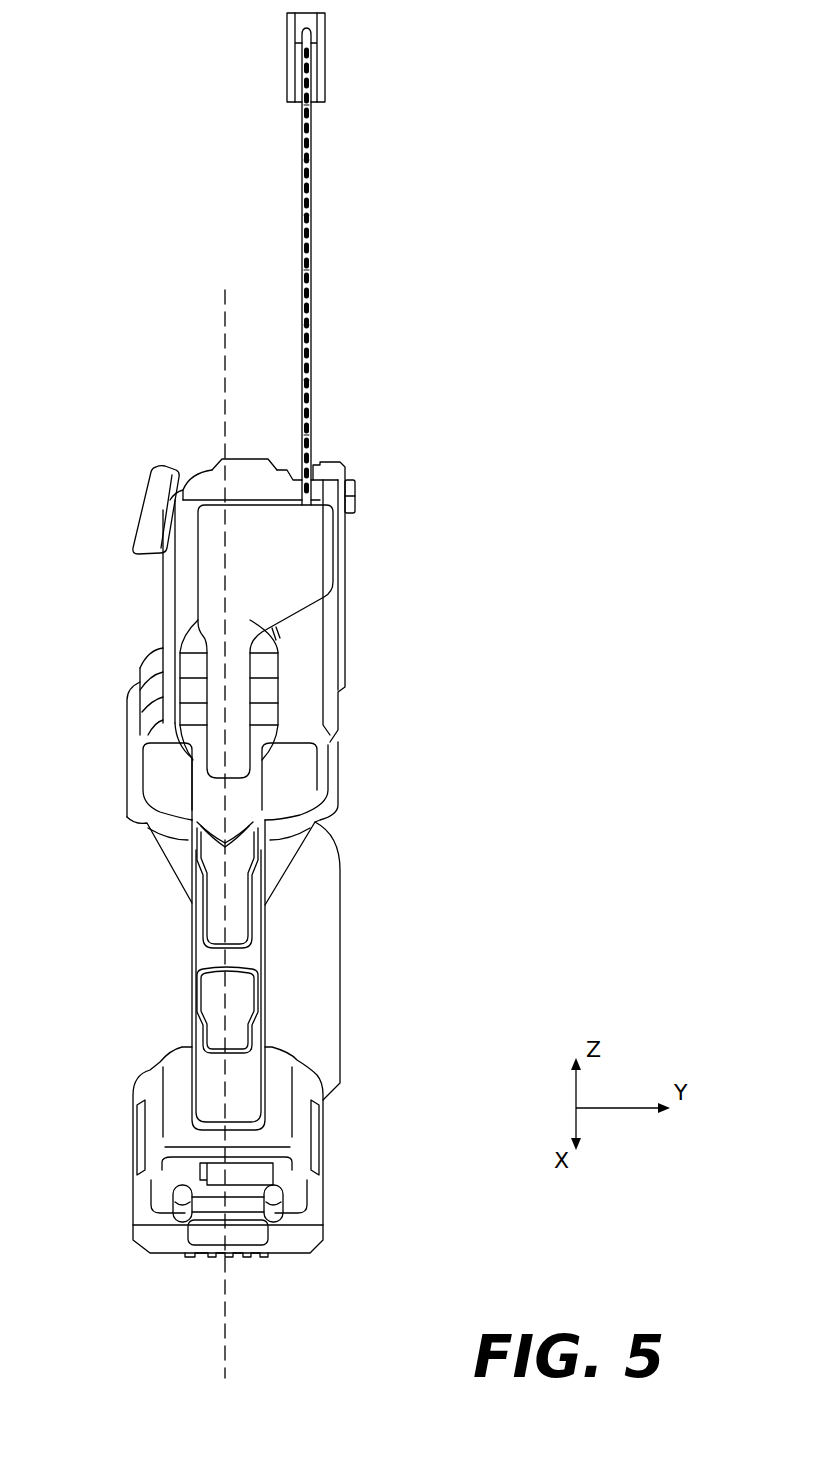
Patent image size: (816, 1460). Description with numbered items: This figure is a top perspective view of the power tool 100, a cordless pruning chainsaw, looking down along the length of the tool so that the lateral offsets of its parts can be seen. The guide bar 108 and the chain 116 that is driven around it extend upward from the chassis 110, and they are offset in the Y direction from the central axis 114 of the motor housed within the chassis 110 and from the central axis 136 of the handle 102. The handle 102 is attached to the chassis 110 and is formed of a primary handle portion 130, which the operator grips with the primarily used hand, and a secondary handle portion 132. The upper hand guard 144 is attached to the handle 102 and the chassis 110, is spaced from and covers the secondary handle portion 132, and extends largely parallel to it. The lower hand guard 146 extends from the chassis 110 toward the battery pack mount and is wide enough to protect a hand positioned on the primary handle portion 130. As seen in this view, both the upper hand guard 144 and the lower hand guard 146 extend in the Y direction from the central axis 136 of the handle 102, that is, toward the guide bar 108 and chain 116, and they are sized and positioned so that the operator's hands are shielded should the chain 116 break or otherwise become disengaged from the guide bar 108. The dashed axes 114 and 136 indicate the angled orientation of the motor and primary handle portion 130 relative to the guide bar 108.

The power tool 100 is at (184, 32).
The handle 102 is at (374, 750).
The guide bar 108 is at (313, 220).
The chassis 110 is at (132, 765).
The central axis of the motor 114 is at (225, 1303).
The chain 116 is at (301, 148).
The primary handle portion 130 is at (192, 976).
The secondary handle portion 132 is at (183, 610).
The central axis of the primary handle portion 136 is at (225, 1337).
The upper hand guard 144 is at (334, 548).
The lower hand guard 146 is at (340, 974).